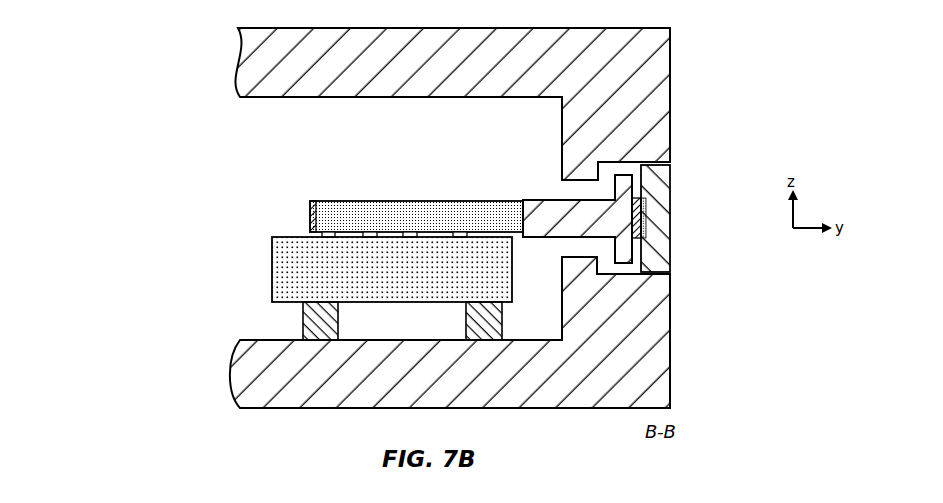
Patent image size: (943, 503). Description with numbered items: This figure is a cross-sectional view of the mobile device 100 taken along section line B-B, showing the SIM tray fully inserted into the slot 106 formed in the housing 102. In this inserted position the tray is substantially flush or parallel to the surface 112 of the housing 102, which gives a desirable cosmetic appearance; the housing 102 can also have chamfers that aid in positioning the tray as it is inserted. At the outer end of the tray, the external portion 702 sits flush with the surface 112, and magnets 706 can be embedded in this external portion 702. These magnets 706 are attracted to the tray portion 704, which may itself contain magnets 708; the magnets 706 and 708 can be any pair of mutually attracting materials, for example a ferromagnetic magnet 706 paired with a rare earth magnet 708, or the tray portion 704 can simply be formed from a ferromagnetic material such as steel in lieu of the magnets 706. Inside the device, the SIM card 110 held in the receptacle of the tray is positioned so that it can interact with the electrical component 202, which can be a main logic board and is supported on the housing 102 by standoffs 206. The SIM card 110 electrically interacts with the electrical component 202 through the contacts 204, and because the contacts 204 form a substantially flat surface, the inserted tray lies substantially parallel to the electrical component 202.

The mobile device 100 is at (104, 54).
The housing 102 is at (670, 347).
The slot 106 is at (712, 184).
The SIM card 110 is at (413, 200).
The surface 112 is at (682, 76).
The electrical component 202 is at (272, 248).
The contacts 204 is at (310, 232).
The standoffs 206 is at (338, 315).
The external portion 702 is at (673, 220).
The tray portion 704 is at (594, 229).
The magnets 706 is at (660, 184).
The magnets 708 is at (620, 192).